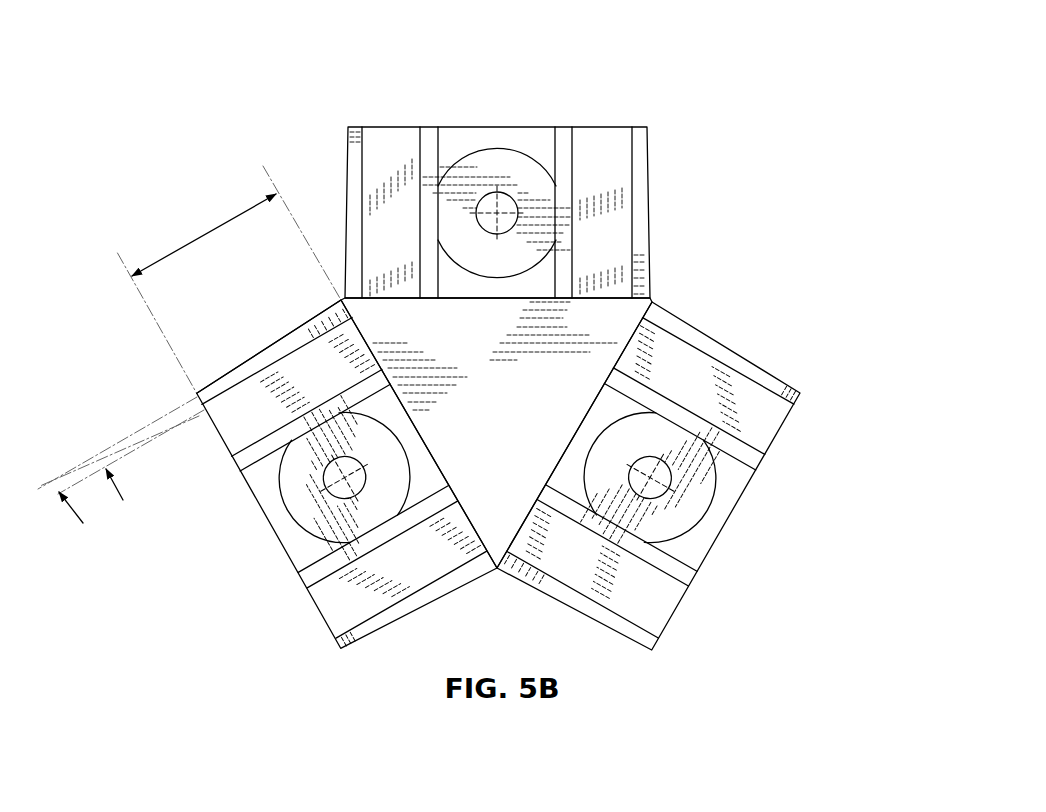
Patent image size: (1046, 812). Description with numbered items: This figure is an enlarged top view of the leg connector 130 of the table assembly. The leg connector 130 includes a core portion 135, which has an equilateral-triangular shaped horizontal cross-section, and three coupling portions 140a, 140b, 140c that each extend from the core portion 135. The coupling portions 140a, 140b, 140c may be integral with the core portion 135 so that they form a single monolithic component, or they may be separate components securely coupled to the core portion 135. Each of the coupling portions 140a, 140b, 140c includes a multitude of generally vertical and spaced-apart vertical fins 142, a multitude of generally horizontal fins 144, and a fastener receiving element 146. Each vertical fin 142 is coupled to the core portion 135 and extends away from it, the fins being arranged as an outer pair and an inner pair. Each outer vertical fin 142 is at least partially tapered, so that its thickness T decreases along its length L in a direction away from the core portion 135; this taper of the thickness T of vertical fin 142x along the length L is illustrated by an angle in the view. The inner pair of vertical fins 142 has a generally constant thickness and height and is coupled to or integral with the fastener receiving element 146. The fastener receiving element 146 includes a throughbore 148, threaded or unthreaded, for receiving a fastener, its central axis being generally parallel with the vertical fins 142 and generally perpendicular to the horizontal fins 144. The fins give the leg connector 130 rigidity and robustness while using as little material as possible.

The leg connector 130 is at (205, 112).
The core portion 135 is at (395, 325).
The coupling portion 140a is at (657, 127).
The coupling portion 140b is at (172, 377).
The coupling portion 140c is at (803, 361).
The vertical fins 142 is at (368, 128).
The vertical fin 142x is at (214, 424).
The horizontal fins 144 is at (376, 192).
The fastener receiving element 146 is at (510, 152).
The throughbore 148 is at (491, 194).
The length L is at (203, 236).
The thickness T is at (89, 450).